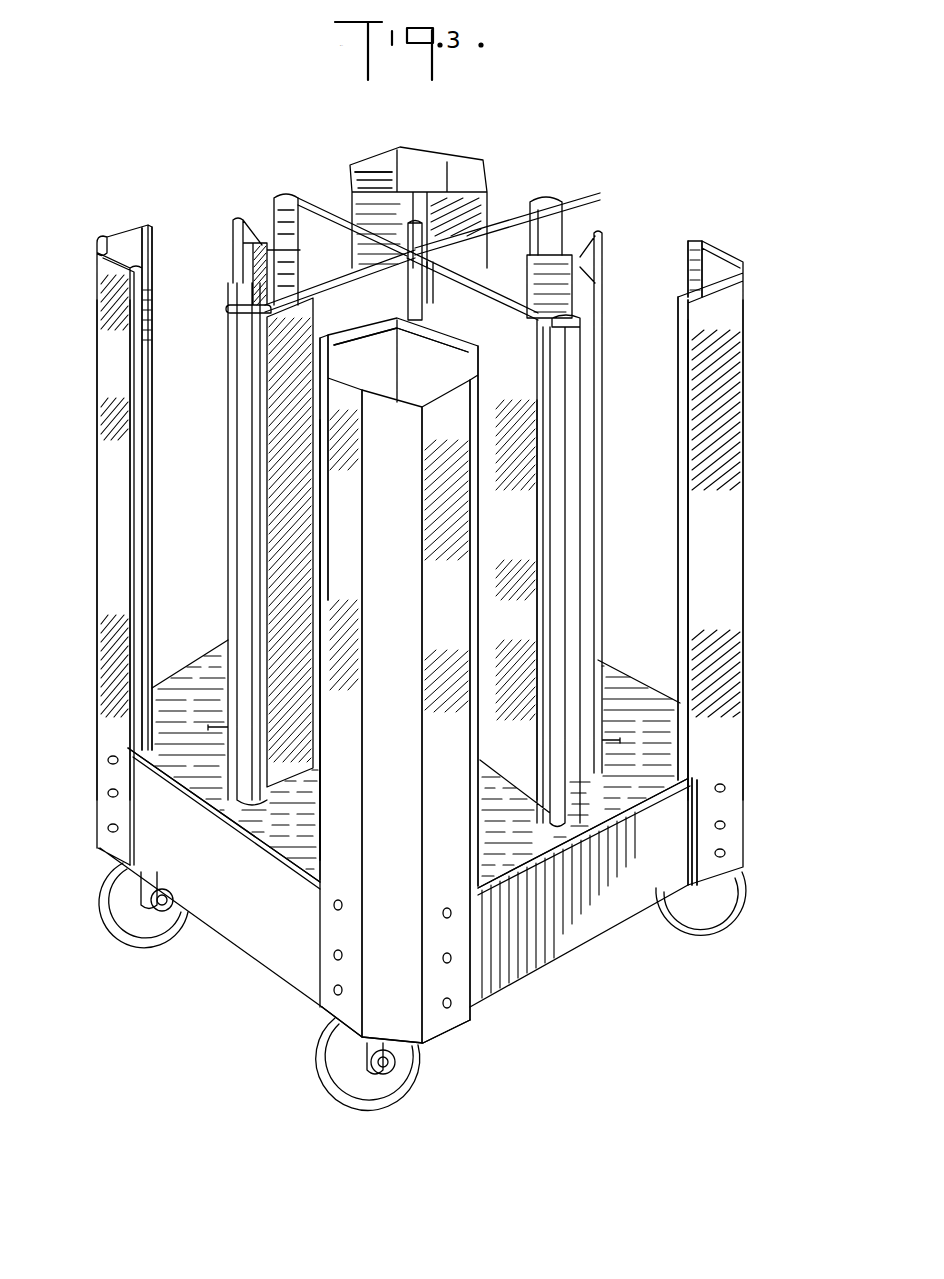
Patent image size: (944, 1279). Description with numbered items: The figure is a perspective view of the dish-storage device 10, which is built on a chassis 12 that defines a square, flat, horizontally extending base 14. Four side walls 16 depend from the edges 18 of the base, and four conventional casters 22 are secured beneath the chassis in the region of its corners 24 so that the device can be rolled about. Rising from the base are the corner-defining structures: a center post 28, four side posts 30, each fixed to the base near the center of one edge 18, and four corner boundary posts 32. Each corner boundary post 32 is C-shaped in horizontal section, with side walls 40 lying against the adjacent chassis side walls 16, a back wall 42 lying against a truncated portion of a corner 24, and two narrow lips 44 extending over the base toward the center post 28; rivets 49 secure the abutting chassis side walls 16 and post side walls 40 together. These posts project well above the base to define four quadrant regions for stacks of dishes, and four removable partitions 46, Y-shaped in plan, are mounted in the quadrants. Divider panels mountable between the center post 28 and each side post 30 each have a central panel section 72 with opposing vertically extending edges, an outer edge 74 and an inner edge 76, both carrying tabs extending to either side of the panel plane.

The device 10 is at (746, 210).
The chassis 12 is at (451, 875).
The base 14 is at (268, 833).
The side walls 16 is at (275, 965).
The edge 18 is at (182, 790).
The casters 22 is at (142, 950).
The corners 24 is at (735, 780).
The center post 28 is at (408, 300).
The side posts 30 is at (290, 192).
The corner boundary posts 32 is at (475, 165).
The side walls 40 is at (375, 150).
The back wall 42 is at (440, 150).
The lips 44 is at (350, 190).
The partitions 46 is at (480, 195).
The rivets 49 is at (107, 826).
The central panel section 72 is at (340, 256).
The outer edge 74 is at (265, 212).
The inner edge 76 is at (395, 240).